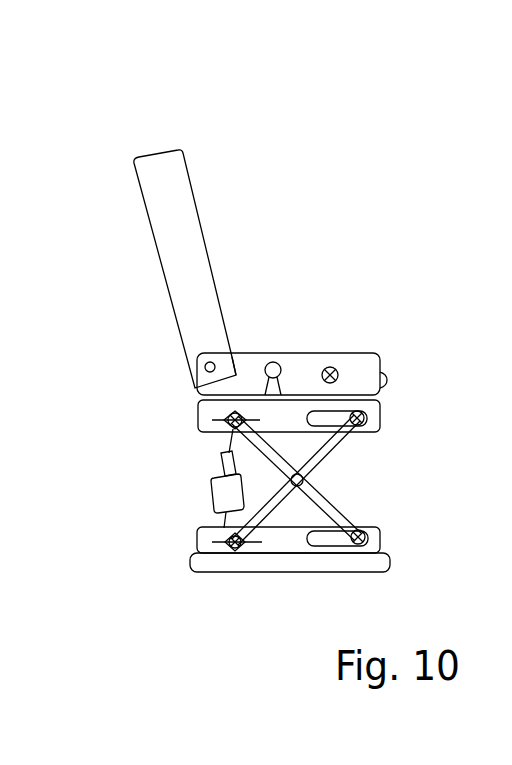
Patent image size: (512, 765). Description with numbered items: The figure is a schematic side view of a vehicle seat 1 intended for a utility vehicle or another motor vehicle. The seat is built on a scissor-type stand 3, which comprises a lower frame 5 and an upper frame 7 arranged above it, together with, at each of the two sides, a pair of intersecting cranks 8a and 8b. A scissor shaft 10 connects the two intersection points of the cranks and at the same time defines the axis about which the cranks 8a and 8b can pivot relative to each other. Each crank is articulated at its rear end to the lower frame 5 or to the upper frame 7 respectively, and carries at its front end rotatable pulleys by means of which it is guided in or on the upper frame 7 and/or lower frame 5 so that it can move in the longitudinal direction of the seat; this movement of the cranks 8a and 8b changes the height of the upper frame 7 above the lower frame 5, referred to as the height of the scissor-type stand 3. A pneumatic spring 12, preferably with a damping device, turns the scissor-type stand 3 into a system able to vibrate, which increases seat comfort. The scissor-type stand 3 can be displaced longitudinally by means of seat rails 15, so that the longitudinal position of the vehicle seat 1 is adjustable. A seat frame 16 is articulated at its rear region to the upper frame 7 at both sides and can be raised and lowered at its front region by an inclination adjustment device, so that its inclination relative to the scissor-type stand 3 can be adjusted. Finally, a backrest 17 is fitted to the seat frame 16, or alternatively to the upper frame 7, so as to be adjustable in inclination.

The vehicle seat 1 is at (384, 448).
The scissor-type stand 3 is at (350, 452).
The lower frame 5 is at (384, 534).
The upper frame 7 is at (383, 404).
The crank 8a is at (268, 452).
The crank 8b is at (278, 498).
The scissor shaft 10 is at (302, 483).
The pneumatic spring 12 is at (221, 493).
The seat rails 15 is at (200, 547).
The seat frame 16 is at (360, 364).
The backrest 17 is at (182, 288).